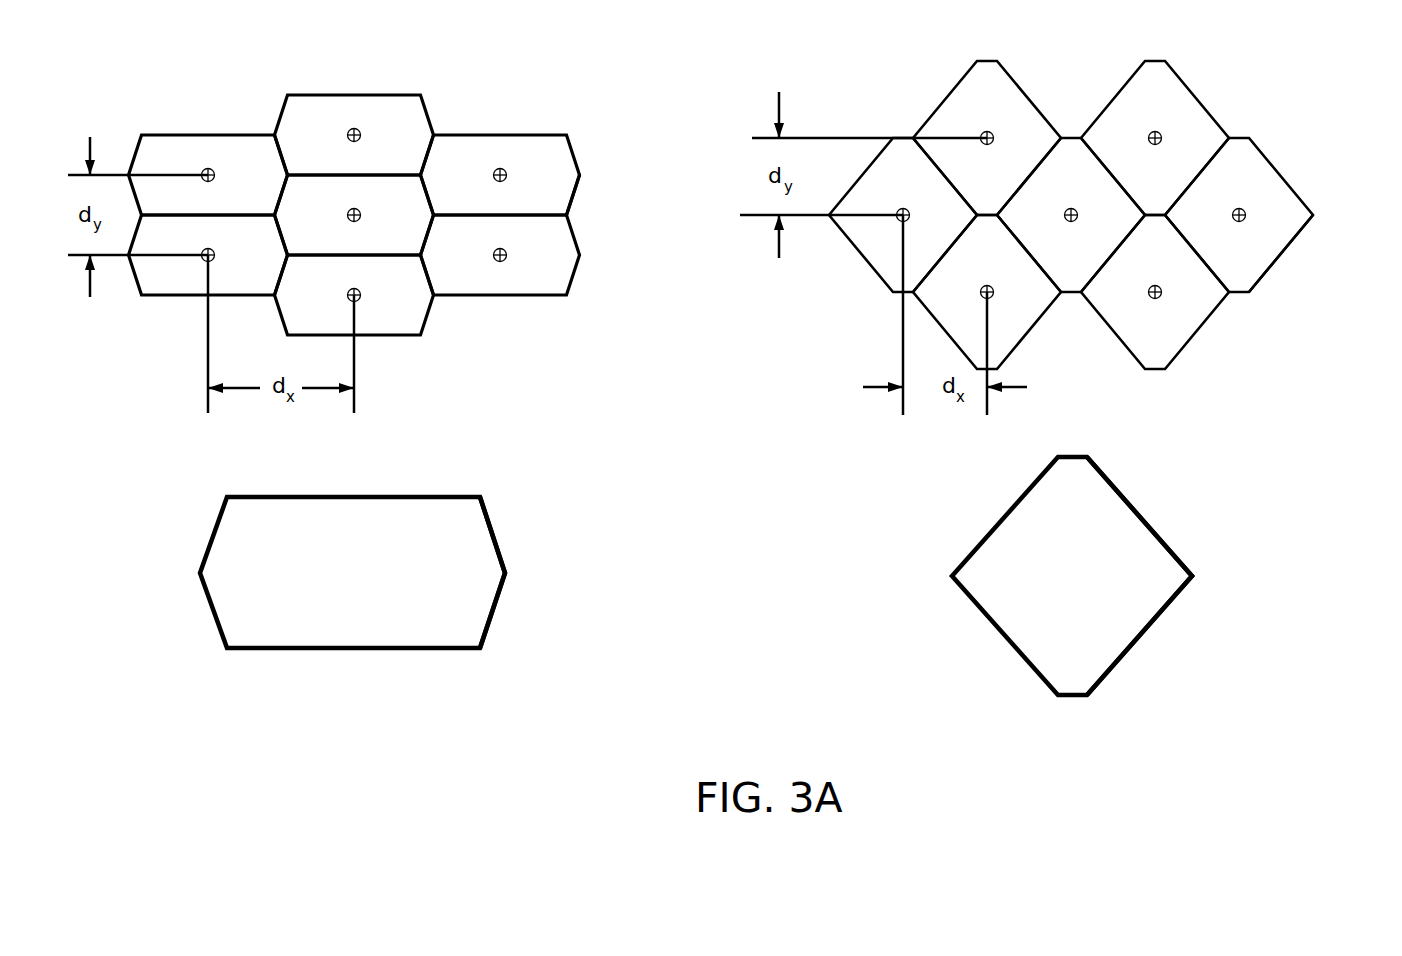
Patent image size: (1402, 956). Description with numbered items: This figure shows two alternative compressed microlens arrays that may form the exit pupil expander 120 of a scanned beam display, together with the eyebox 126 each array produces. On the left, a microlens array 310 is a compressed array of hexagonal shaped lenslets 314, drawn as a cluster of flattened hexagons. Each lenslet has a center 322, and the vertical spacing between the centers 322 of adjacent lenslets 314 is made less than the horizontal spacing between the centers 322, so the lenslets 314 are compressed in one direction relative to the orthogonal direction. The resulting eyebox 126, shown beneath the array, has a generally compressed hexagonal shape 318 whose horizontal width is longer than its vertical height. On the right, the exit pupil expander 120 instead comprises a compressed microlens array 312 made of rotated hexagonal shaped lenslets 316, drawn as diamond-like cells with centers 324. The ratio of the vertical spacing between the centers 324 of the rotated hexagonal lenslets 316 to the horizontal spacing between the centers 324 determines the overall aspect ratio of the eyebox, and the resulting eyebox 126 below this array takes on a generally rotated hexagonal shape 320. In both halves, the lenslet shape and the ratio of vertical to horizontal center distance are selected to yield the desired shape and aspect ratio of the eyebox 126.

The exit pupil expander 120 is at (529, 117).
The eyebox 126 is at (492, 520).
The microlens array 310 is at (580, 175).
The compressed microlens array 312 is at (1300, 192).
The hexagonal shaped lenslet 314 is at (570, 202).
The rotated hexagonal shaped lenslet 316 is at (1287, 252).
The compressed hexagonal shape 318 is at (505, 573).
The rotated hexagonal shape 320 is at (1192, 575).
The center 322 is at (354, 128).
The center 324 is at (987, 128).